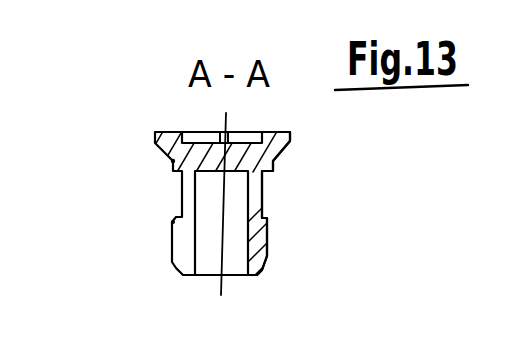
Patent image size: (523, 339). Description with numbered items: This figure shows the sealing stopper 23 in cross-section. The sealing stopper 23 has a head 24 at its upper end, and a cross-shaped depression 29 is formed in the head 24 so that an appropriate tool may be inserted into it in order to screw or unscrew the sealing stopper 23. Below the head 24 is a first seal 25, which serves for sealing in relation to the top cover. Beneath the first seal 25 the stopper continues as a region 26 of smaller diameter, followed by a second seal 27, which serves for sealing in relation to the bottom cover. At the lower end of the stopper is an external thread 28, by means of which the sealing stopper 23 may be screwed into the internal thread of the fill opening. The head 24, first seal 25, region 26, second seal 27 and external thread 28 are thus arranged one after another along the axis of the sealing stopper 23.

The sealing stopper 23 is at (94, 118).
The head 24 is at (270, 148).
The first seal 25 is at (273, 160).
The region of smaller diameter 26 is at (263, 193).
The second seal 27 is at (268, 225).
The external thread 28 is at (266, 253).
The cross-shaped depression 29 is at (195, 136).